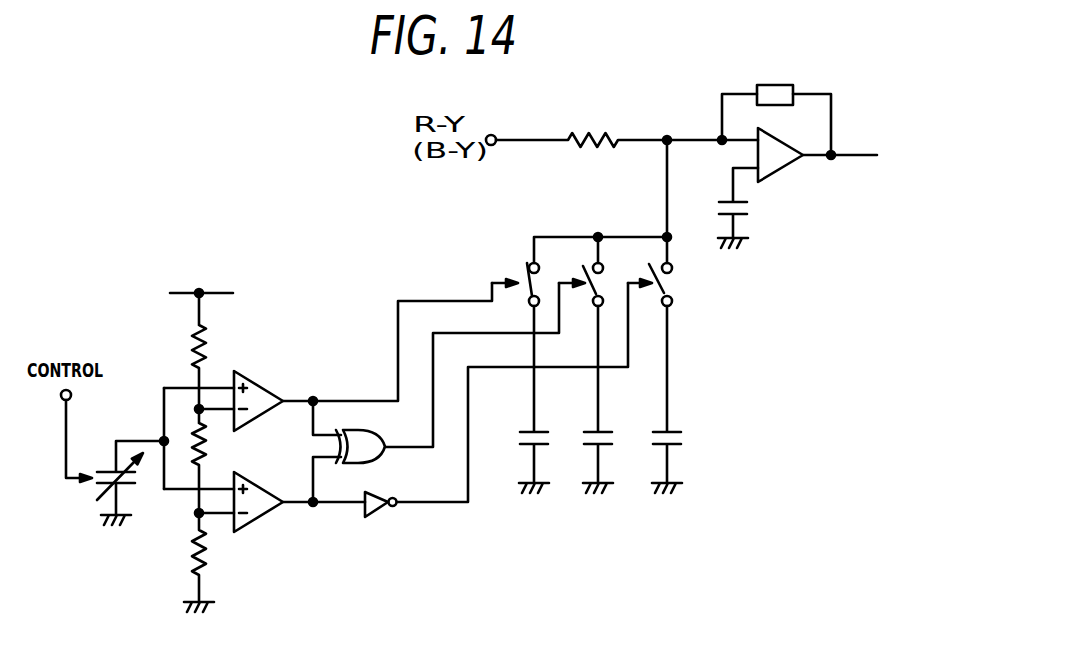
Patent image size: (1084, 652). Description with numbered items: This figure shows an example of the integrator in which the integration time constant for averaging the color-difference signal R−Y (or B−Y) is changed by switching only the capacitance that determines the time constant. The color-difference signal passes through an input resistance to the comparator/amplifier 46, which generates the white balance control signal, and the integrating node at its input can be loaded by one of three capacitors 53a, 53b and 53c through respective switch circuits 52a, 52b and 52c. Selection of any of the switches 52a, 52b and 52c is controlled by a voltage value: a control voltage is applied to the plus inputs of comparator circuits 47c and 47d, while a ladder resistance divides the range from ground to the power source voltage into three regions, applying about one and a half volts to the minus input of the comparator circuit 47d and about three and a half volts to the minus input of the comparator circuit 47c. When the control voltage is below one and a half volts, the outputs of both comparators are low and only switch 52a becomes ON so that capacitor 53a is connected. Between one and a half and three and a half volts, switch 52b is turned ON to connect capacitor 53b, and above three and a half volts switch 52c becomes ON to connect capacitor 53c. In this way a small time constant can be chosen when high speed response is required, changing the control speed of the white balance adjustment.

The comparator/amplifier 46 is at (778, 171).
The comparator circuit 47c is at (266, 388).
The comparator circuit 47d is at (266, 485).
The switch circuit 52a is at (517, 266).
The switch circuit 52b is at (577, 266).
The switch circuit 52c is at (644, 266).
The capacitor 53a is at (555, 436).
The capacitor 53b is at (619, 436).
The capacitor 53c is at (687, 436).